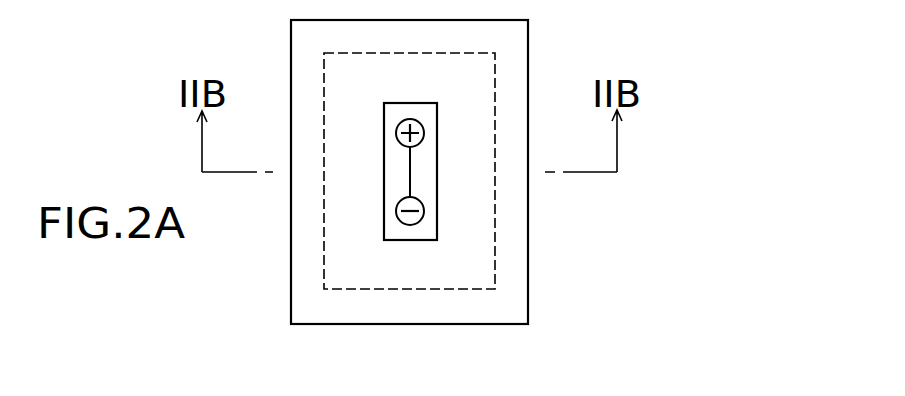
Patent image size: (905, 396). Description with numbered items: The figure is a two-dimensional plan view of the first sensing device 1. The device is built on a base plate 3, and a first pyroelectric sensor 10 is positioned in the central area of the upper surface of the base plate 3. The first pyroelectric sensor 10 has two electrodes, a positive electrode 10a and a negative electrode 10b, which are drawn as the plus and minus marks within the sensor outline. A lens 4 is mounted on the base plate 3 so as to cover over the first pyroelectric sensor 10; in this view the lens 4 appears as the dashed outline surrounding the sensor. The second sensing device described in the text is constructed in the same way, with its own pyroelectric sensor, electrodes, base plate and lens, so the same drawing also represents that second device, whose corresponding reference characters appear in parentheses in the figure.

The first sensing device 1 is at (721, 91).
The base plate 3 is at (528, 292).
The lens 4 is at (363, 262).
The first pyroelectric sensor 10 is at (554, 204).
The positive electrode 10a is at (420, 123).
The negative electrode 10b is at (424, 216).